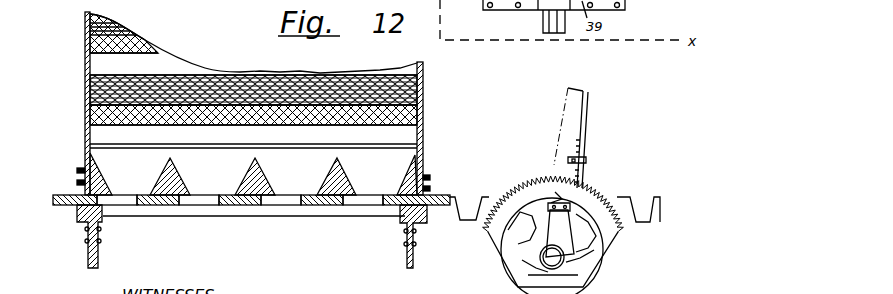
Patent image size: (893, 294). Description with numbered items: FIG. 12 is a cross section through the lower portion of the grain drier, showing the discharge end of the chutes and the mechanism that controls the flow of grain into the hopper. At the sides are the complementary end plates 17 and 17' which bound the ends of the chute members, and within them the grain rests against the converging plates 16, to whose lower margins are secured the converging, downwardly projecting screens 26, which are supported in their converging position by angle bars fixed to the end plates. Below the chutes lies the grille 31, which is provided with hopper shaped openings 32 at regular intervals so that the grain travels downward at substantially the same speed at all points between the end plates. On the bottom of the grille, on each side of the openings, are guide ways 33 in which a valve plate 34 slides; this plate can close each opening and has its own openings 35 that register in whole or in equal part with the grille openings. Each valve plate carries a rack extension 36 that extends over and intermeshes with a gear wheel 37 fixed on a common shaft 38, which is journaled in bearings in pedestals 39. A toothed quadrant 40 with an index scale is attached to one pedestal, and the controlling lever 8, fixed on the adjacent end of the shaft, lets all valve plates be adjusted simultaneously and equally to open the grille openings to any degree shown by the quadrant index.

The controlling lever 8 is at (573, 98).
The converging plates 16 is at (103, 60).
The end plate 17 is at (73, 103).
The end plate 17' is at (437, 128).
The screens 26 is at (86, 42).
The grille 31 is at (222, 160).
The hopper shaped openings 32 is at (130, 178).
The guide ways 33 is at (333, 214).
The valve plate 34 is at (165, 200).
The openings 35 is at (121, 199).
The rack extension 36 is at (478, 191).
The gear wheel 37 is at (578, 237).
The common shaft 38 is at (550, 257).
The pedestals 39 is at (572, 264).
The toothed quadrant 40 is at (583, 198).